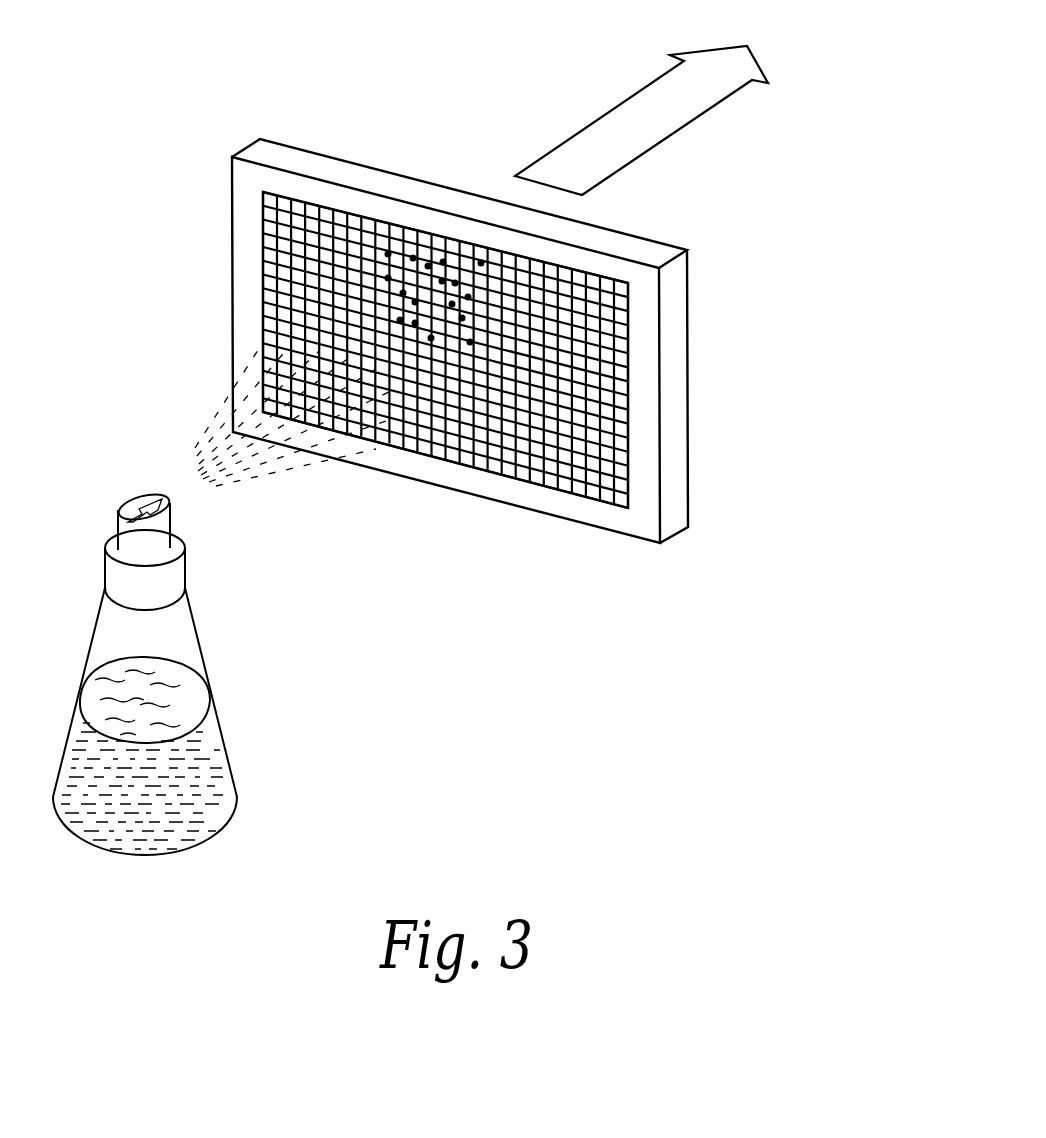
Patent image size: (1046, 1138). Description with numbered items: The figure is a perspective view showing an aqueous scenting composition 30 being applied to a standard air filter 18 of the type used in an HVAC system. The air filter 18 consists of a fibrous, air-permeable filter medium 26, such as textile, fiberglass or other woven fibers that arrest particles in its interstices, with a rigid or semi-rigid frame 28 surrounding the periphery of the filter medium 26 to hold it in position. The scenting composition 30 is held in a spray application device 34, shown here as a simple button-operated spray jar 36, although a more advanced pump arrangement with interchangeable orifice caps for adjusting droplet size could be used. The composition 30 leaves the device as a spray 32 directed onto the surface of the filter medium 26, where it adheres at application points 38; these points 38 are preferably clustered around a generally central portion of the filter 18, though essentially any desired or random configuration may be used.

The air filter 18 is at (533, 301).
The filter medium 26 is at (283, 214).
The frame 28 is at (670, 390).
The aqueous scenting composition 30 is at (195, 757).
The spray 32 is at (197, 440).
The spray application device 34 is at (206, 672).
The spray jar 36 is at (157, 524).
The application points 38 is at (450, 285).